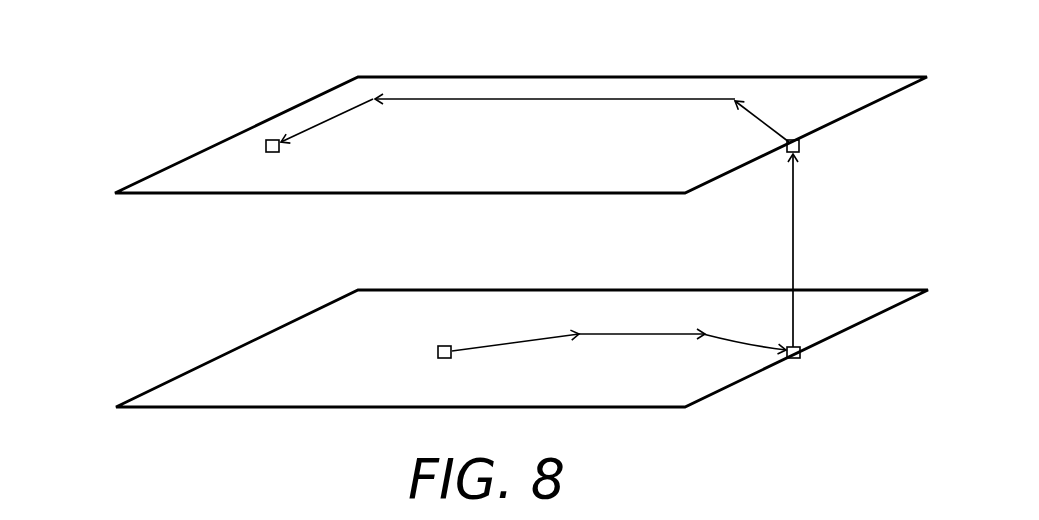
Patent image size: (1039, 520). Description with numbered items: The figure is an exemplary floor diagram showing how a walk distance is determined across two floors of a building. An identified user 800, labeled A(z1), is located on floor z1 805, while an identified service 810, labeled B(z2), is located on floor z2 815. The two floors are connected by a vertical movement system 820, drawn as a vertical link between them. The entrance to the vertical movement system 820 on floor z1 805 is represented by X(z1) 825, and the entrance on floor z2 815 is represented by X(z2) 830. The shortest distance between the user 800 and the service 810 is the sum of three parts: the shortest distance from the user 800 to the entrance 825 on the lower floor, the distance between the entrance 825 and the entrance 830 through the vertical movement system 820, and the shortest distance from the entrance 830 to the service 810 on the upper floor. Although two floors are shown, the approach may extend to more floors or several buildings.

The user 800 is at (444, 345).
The floor z1 805 is at (560, 289).
The service 810 is at (273, 139).
The floor z2 815 is at (560, 77).
The vertical movement system 820 is at (793, 260).
The entrance to the vertical movement system on floor z1 825 is at (800, 348).
The entrance to the vertical movement system on floor z2 830 is at (793, 139).